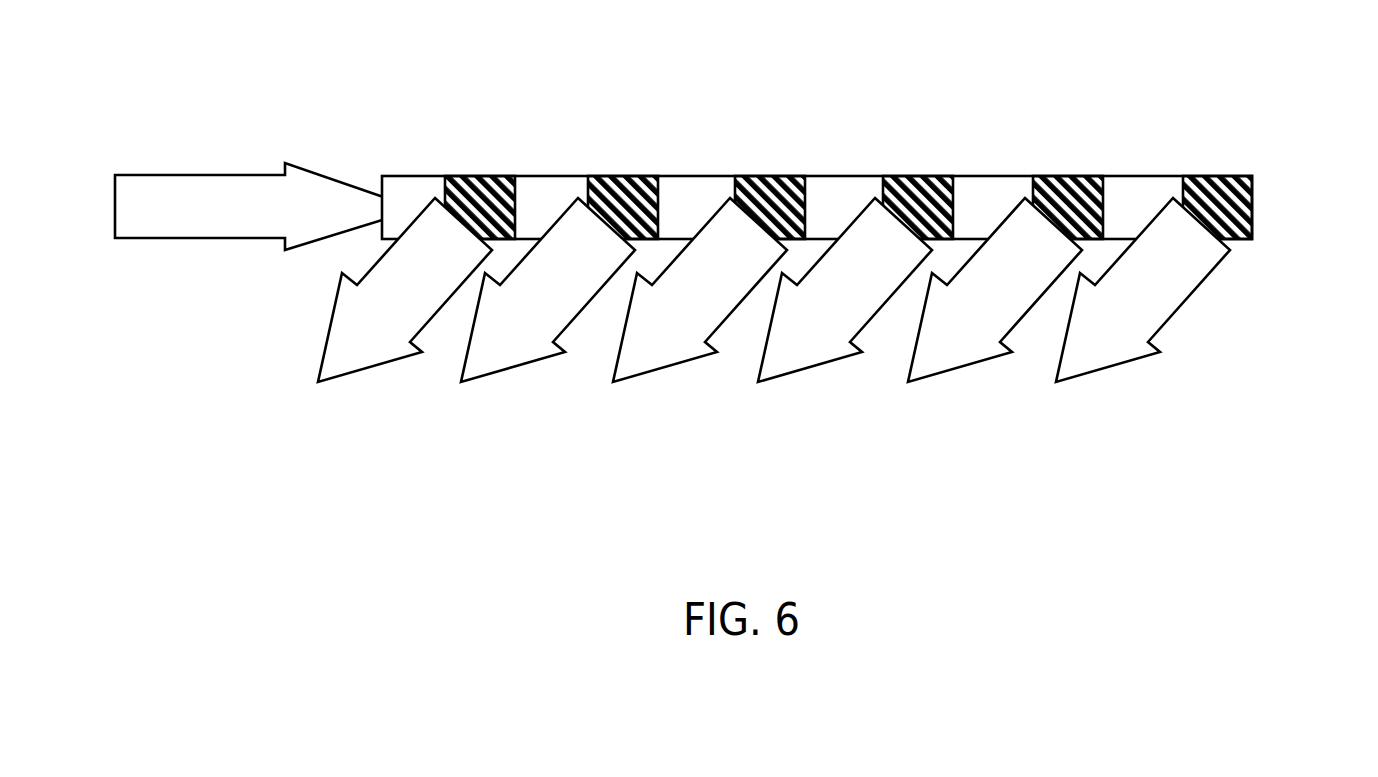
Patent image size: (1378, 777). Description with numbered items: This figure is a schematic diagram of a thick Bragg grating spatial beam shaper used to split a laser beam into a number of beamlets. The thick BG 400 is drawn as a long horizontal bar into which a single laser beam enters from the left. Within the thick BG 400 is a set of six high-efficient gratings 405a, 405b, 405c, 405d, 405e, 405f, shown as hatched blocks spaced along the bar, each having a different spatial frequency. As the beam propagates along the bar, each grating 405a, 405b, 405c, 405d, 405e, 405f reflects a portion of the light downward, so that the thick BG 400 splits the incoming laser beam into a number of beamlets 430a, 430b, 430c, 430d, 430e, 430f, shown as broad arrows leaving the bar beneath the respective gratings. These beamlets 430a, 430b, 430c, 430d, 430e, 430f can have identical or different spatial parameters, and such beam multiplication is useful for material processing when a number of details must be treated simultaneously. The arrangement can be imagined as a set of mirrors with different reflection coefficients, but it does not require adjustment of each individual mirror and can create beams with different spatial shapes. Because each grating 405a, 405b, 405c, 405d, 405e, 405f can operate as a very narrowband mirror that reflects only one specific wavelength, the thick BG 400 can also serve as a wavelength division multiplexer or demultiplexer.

The thick BG 400 is at (1246, 95).
The grating 405a is at (468, 176).
The grating 405b is at (618, 176).
The grating 405c is at (760, 176).
The grating 405d is at (913, 176).
The grating 405e is at (1058, 176).
The grating 405f is at (1217, 176).
The beamlet 430a is at (420, 328).
The beamlet 430b is at (563, 328).
The beamlet 430c is at (715, 328).
The beamlet 430d is at (860, 328).
The beamlet 430e is at (1010, 328).
The beamlet 430f is at (1158, 328).